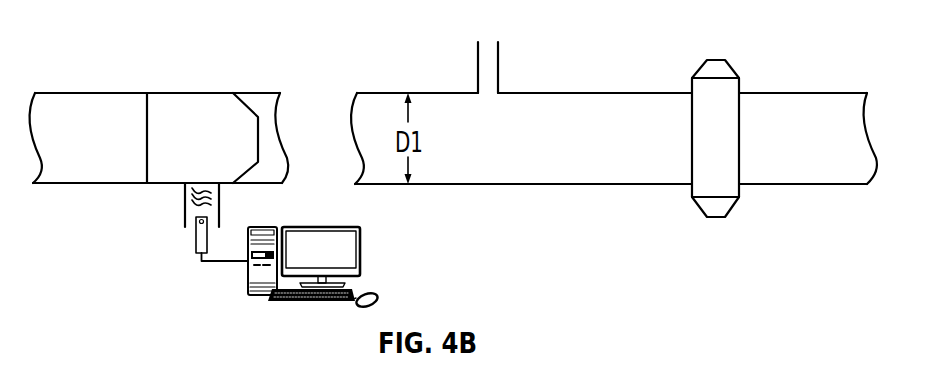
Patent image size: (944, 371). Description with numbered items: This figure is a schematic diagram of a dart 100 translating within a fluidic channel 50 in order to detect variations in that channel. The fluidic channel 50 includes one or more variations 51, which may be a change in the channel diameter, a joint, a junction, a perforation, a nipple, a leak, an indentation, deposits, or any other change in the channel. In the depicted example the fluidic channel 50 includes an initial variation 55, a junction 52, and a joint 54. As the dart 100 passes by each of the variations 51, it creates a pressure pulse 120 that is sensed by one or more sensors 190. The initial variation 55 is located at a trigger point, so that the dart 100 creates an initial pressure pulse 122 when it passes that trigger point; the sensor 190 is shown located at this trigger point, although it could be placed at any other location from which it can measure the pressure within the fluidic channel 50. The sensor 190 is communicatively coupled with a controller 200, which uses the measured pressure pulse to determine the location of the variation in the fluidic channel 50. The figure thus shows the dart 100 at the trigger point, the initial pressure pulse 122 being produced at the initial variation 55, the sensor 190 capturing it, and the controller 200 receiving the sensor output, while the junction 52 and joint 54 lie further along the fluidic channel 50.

The fluidic channel 50 is at (625, 93).
The variations 51 is at (468, 137).
The junction 52 is at (478, 53).
The joint 54 is at (733, 62).
The initial variation 55 is at (222, 217).
The dart 100 is at (187, 107).
The pressure pulse 120 is at (135, 220).
The initial pressure pulse 122 is at (185, 193).
The sensor 190 is at (200, 262).
The controller 200 is at (362, 252).